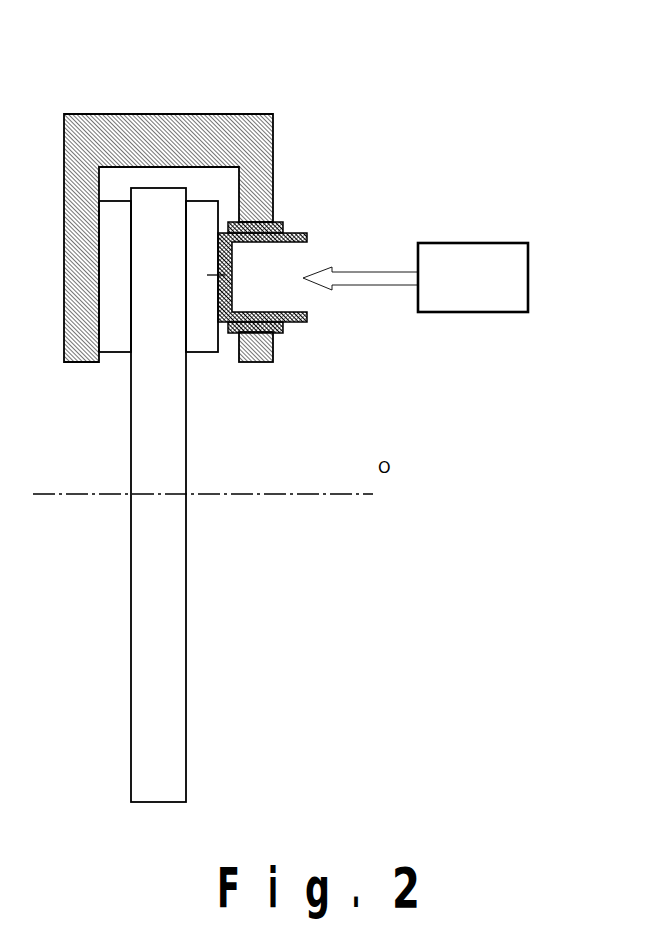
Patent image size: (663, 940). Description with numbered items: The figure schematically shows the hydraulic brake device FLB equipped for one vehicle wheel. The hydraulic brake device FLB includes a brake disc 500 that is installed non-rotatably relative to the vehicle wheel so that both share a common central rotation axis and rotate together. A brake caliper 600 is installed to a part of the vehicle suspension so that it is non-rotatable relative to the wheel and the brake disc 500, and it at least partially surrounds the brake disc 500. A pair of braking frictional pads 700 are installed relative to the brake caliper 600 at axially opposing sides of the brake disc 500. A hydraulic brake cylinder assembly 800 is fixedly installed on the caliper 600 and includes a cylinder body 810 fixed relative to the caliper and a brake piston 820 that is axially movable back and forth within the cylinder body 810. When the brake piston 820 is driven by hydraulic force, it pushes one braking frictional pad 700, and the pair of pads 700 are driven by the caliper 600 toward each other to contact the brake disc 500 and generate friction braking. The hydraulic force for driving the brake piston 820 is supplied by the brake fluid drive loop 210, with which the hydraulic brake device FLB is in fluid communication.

The hydraulic brake device FLB is at (273, 104).
The brake caliper 600 is at (210, 114).
The braking frictional pads 700 is at (113, 310).
The brake disc 500 is at (187, 497).
The cylinder body 810 is at (277, 221).
The brake piston 820 is at (304, 232).
The hydraulic brake cylinder assembly 800 is at (280, 308).
The brake fluid drive loop 210 is at (415, 277).